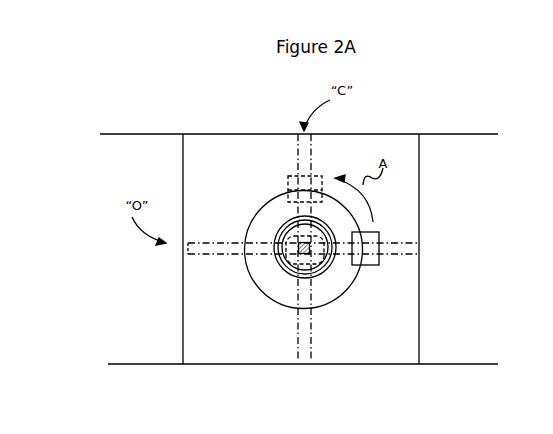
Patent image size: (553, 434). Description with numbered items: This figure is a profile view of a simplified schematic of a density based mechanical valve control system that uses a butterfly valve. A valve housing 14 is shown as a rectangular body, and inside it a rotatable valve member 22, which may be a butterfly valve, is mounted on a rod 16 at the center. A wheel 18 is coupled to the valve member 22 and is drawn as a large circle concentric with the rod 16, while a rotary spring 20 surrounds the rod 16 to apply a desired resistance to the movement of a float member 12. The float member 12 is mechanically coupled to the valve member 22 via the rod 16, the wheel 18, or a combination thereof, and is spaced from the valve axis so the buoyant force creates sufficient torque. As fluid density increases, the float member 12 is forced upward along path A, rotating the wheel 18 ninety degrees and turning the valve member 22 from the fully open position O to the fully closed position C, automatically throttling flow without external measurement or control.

The float member 12 is at (377, 267).
The valve housing 14 is at (182, 285).
The rod 16 is at (306, 250).
The wheel 18 is at (253, 285).
The rotary spring 20 is at (292, 268).
The valve member 22 is at (395, 242).